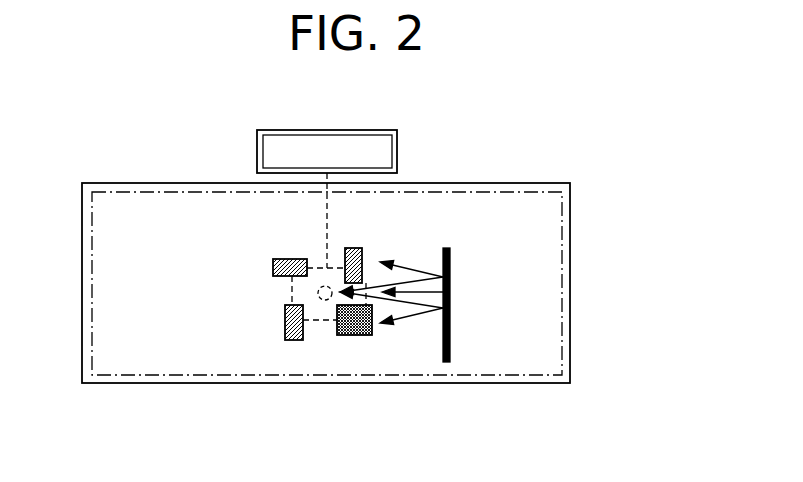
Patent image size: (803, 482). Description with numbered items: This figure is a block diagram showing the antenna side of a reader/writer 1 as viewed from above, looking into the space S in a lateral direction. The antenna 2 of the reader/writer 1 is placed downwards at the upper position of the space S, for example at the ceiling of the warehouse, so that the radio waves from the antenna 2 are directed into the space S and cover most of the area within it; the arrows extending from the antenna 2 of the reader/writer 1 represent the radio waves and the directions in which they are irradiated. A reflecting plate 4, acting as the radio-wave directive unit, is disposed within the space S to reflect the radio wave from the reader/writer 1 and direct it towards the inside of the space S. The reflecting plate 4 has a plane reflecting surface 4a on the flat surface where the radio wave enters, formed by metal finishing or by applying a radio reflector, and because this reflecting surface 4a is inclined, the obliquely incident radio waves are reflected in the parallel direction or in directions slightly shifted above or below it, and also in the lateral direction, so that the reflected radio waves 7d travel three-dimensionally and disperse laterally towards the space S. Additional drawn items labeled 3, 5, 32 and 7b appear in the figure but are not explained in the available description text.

The reader/writer 1 is at (397, 148).
The antenna 2 is at (327, 300).
The light receiving element 3 is at (350, 335).
The reflecting plate 4 is at (450, 330).
The plane reflecting surface 4a is at (443, 356).
The housing 5 is at (570, 262).
The space S is at (562, 203).
The light receiving elements 32 is at (273, 265).
The reflected light 7b is at (395, 273).
The reflected radio waves 7d is at (425, 270).